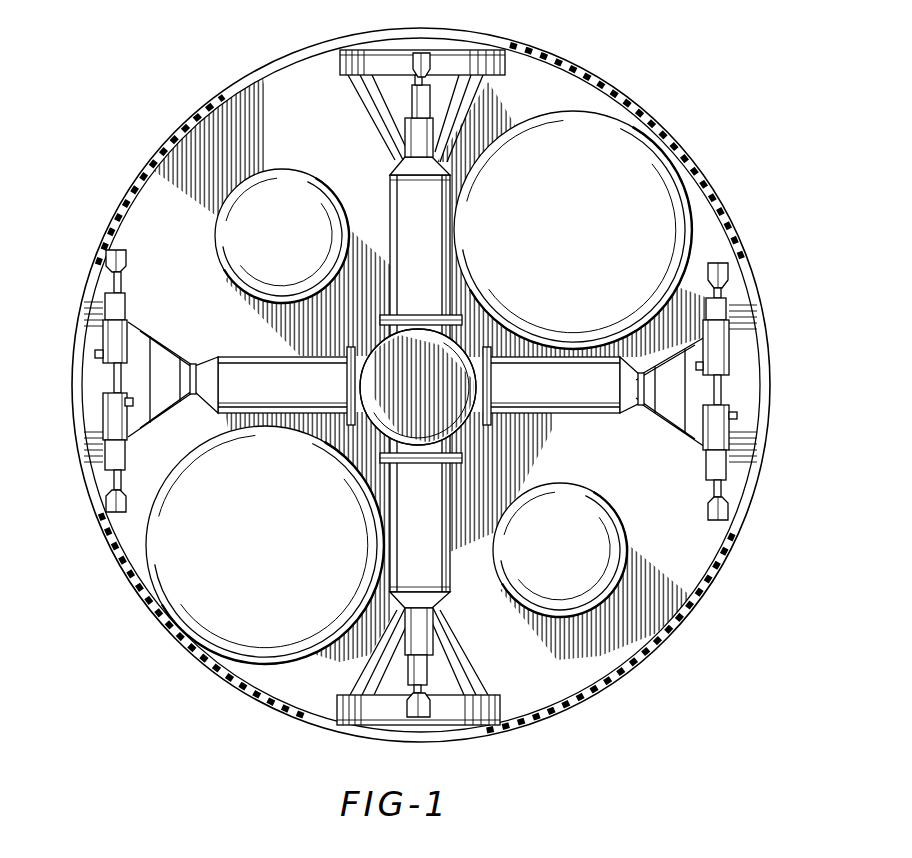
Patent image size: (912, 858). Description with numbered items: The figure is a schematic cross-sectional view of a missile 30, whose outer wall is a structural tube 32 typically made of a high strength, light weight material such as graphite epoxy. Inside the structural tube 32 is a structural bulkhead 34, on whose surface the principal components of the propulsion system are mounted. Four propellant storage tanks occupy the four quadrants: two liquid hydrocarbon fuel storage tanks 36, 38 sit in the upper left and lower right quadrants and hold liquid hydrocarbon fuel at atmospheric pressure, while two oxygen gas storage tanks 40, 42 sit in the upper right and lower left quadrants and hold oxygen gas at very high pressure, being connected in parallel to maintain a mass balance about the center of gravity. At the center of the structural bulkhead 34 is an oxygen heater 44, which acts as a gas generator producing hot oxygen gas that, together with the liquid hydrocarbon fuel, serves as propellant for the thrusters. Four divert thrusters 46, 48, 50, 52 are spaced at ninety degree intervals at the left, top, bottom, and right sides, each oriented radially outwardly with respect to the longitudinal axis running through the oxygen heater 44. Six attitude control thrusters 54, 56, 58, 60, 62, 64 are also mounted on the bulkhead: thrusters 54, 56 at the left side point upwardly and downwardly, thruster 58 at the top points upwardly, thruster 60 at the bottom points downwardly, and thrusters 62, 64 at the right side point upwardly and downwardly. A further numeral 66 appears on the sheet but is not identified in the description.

The missile 30 is at (728, 46).
The structural tube 32 is at (600, 84).
The structural bulkhead 34 is at (646, 470).
The liquid hydrocarbon fuel storage tank 36 is at (305, 185).
The liquid hydrocarbon fuel storage tank 38 is at (512, 575).
The oxygen gas storage tank 40 is at (695, 198).
The oxygen gas storage tank 42 is at (145, 565).
The oxygen heater 44 is at (465, 428).
The divert thruster 46 is at (163, 352).
The divert thruster 48 is at (480, 90).
The divert thruster 50 is at (383, 697).
The divert thruster 52 is at (683, 408).
The attitude control thruster 54 is at (108, 256).
The attitude control thruster 56 is at (106, 508).
The attitude control thruster 58 is at (425, 53).
The attitude control thruster 60 is at (419, 720).
The attitude control thruster 62 is at (732, 280).
The attitude control thruster 64 is at (735, 515).
The detail 66 is at (148, 857).